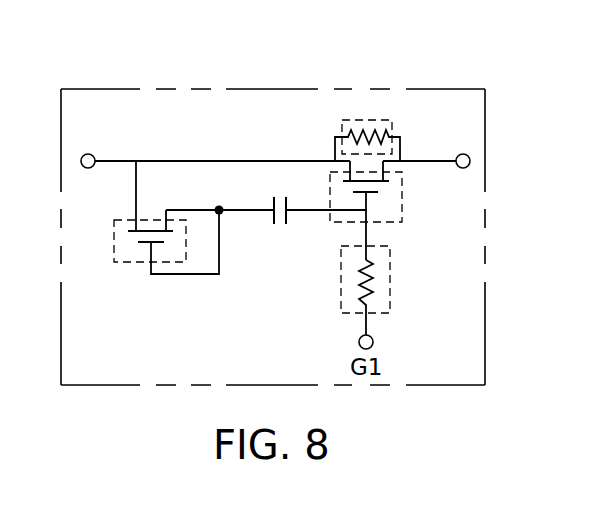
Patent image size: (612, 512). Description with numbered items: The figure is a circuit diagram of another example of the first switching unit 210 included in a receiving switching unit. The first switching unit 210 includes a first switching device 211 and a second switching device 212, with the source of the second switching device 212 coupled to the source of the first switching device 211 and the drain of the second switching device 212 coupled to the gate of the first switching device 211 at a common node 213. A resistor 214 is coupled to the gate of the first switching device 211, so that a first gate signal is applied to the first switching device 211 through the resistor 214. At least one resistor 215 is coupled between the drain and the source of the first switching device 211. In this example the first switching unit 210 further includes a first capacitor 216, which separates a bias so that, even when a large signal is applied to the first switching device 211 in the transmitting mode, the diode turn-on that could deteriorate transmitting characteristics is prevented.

The first switching unit 210 is at (425, 89).
The first switching device 211 is at (403, 200).
The second switching device 212 is at (128, 262).
The node 213 is at (220, 205).
The resistor 214 is at (392, 279).
The resistor 215 is at (393, 124).
The first capacitor 216 is at (277, 226).